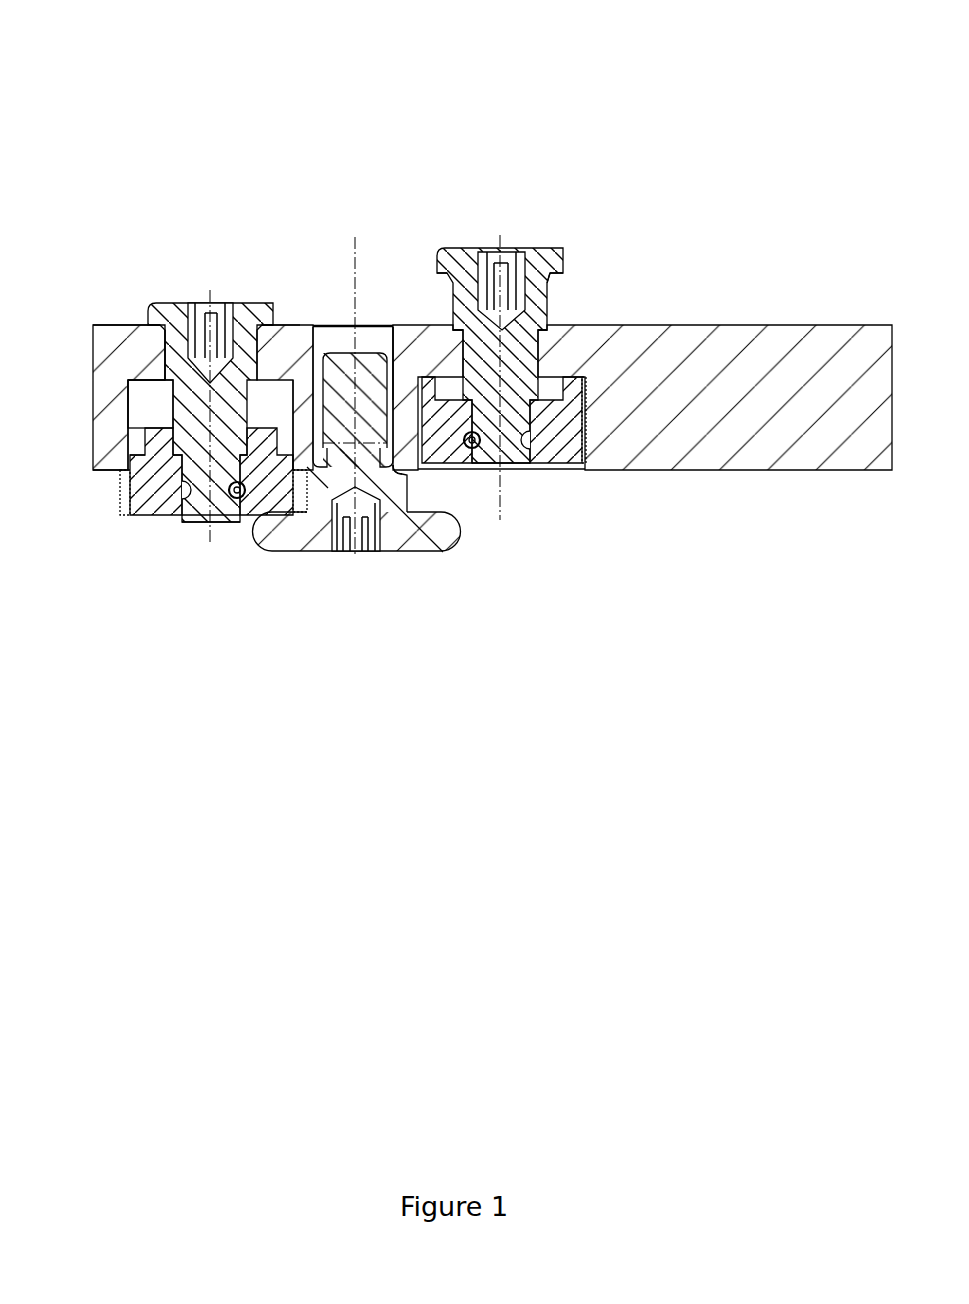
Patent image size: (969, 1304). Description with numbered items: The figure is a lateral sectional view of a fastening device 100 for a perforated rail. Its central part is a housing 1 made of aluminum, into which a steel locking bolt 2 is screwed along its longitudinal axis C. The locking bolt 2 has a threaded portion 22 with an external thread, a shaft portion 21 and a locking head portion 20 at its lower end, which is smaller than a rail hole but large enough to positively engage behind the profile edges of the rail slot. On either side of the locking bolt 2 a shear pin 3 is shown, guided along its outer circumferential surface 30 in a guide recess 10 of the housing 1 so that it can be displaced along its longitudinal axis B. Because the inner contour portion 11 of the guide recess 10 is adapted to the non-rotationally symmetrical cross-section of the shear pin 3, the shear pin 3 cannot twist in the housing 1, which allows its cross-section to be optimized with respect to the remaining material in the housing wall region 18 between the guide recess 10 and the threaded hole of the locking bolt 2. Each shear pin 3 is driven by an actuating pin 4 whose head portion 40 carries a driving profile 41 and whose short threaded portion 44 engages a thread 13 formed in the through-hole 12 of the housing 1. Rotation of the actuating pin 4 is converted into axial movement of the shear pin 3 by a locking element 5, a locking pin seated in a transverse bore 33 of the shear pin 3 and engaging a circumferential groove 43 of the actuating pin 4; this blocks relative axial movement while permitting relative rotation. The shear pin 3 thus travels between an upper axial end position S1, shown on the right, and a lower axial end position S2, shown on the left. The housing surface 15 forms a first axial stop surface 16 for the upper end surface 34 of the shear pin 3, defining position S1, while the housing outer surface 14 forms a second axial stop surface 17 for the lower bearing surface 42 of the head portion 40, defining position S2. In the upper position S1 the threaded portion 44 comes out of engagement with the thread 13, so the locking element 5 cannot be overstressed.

The fastening device 100 is at (153, 98).
The housing 1 is at (836, 327).
The locking bolt 2 is at (412, 542).
The shear pin 3 is at (129, 505).
The actuating pin 4 is at (173, 300).
The locking element 5 is at (238, 500).
The guide recess 10 is at (138, 390).
The inner contour portion 11 is at (152, 378).
The through-hole 12 is at (147, 323).
The thread 13 is at (165, 335).
The housing outer surface 14 is at (286, 322).
The housing surface 15 is at (155, 375).
The first axial stop surface 16 is at (130, 428).
The second axial stop surface 17 is at (254, 322).
The housing wall region 18 is at (310, 502).
The locking head portion 20 is at (270, 540).
The shaft portion 21 is at (407, 478).
The threaded portion 22 is at (388, 322).
The outer circumferential surface 30 is at (124, 488).
The transverse bore 33 is at (230, 522).
The upper end surface 34 is at (300, 322).
The head portion 40 is at (246, 300).
The driving profile 41 is at (204, 300).
The lower bearing surface 42 is at (547, 287).
The circumferential groove 43 is at (185, 515).
The threaded portion 44 is at (167, 375).
The longitudinal axis of the shear pin and actuating pin B is at (504, 497).
The longitudinal axis of the locking bolt C is at (355, 237).
The upper axial end position of the shear pin S1 is at (502, 760).
The lower axial end position of the shear pin S2 is at (201, 760).